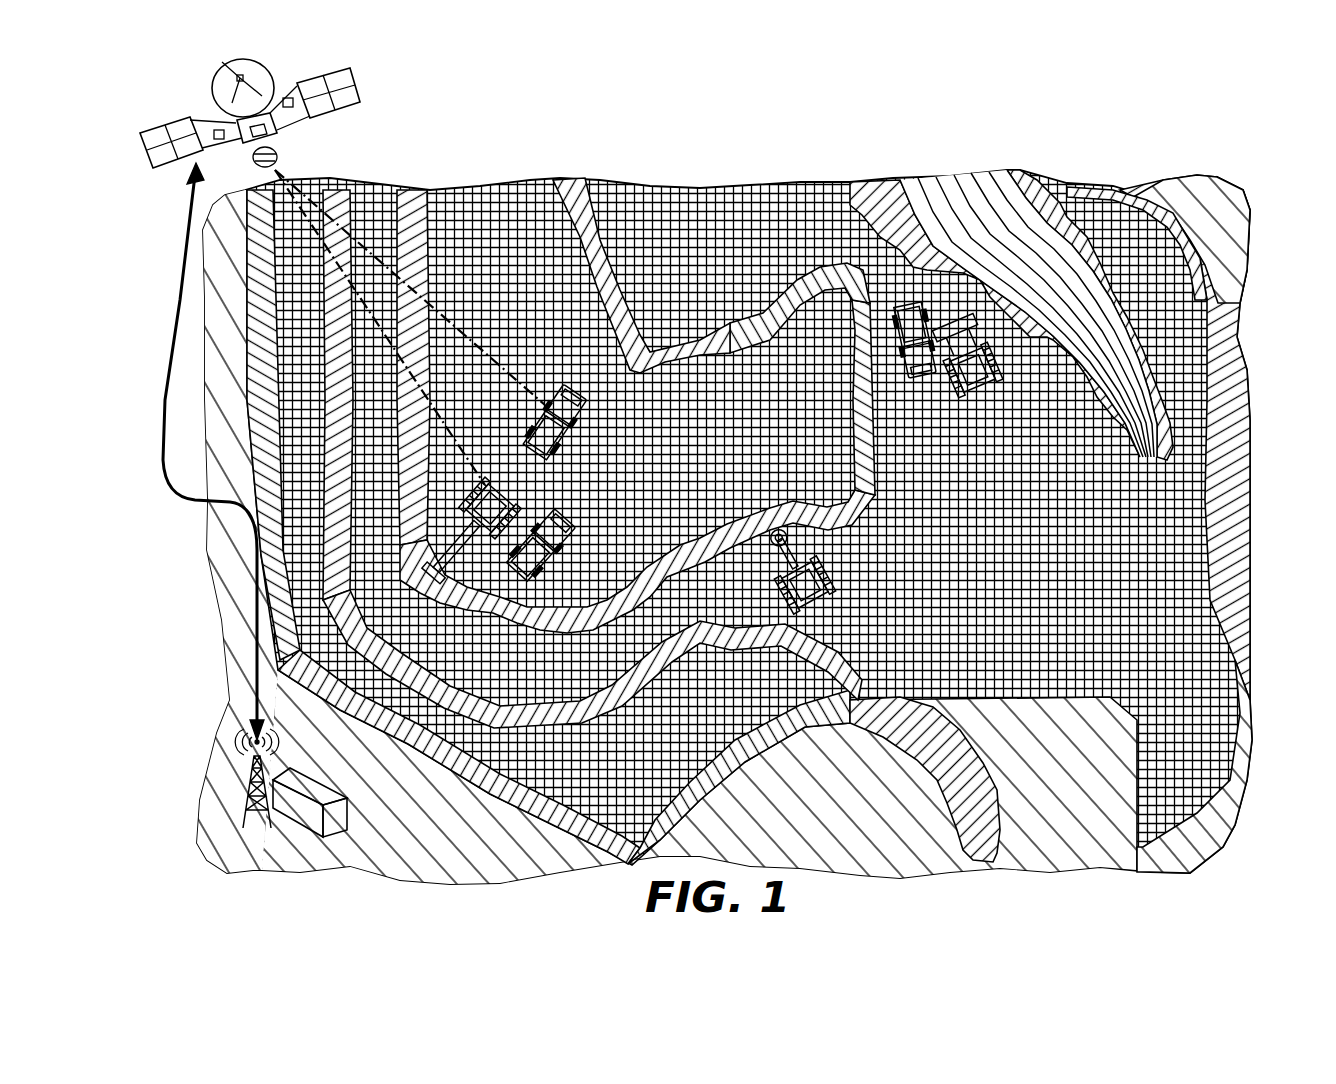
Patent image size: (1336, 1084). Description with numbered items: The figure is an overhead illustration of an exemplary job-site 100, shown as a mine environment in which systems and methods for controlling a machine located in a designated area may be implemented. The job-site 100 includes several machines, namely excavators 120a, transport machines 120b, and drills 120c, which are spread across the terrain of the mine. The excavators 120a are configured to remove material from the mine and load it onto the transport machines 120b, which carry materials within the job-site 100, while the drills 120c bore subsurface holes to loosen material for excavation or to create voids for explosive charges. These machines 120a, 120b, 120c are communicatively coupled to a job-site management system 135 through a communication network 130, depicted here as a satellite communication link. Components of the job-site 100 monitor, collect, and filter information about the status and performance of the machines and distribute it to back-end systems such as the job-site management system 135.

The job-site 100 is at (763, 175).
The communication network 130 is at (273, 127).
The job-site management system 135 is at (347, 812).
The excavator 120a is at (496, 475).
The transport machine 120b is at (574, 430).
The drill 120c is at (826, 570).